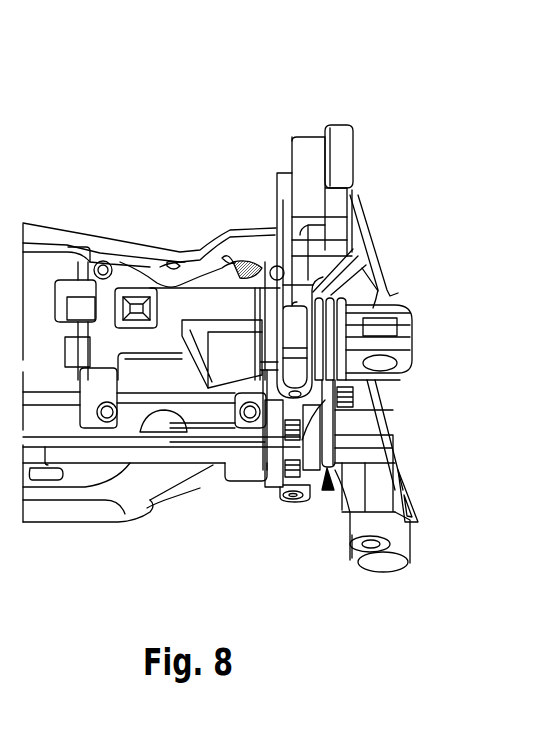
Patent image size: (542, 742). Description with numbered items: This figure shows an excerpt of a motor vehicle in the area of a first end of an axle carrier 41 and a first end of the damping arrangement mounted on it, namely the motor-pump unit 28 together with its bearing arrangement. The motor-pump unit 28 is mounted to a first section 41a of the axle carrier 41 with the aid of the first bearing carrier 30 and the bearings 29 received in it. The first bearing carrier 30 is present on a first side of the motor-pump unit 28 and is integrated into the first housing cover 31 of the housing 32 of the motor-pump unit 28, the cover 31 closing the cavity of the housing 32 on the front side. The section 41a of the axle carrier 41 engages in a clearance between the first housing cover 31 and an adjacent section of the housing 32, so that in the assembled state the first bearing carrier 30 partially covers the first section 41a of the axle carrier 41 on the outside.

The motor-pump unit 28 is at (215, 211).
The bearings 29 is at (410, 320).
The first bearing carrier 30 is at (308, 483).
The first housing cover 31 is at (332, 490).
The housing 32 is at (166, 305).
The axle carrier 41 is at (318, 128).
The first section of the axle carrier 41a is at (313, 272).